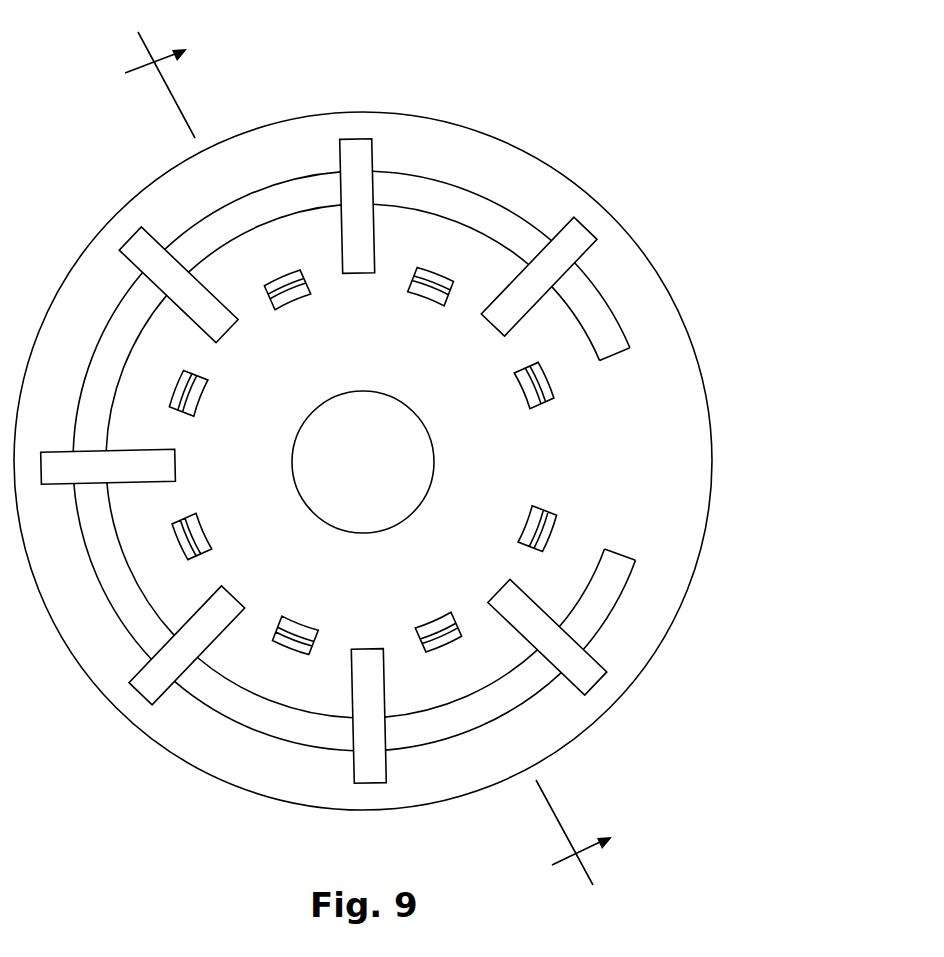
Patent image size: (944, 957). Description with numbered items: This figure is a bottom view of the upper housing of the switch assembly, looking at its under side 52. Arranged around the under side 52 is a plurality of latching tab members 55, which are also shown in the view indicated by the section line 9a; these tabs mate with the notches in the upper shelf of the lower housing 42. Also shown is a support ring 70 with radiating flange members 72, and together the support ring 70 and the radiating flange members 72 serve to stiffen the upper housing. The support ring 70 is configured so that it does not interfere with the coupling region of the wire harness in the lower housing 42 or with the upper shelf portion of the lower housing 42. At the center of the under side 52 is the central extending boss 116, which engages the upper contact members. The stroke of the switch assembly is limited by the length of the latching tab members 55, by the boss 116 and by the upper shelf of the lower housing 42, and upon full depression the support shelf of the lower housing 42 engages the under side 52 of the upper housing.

The lower housing 42 is at (685, 435).
The support ring 70 is at (475, 212).
The under side 52 is at (505, 468).
The radiating flange members 72 is at (590, 675).
The boss 116 is at (398, 443).
The latching tab members 55 is at (197, 537).
The section view 9a is at (383, 443).